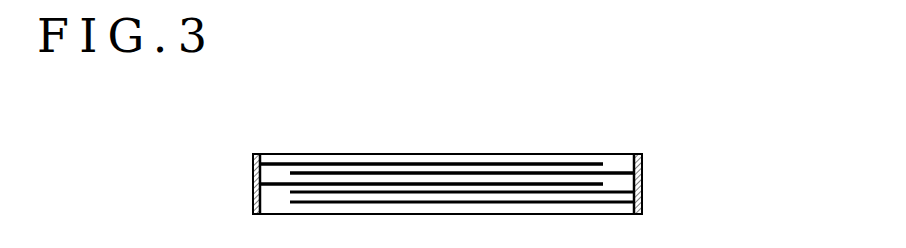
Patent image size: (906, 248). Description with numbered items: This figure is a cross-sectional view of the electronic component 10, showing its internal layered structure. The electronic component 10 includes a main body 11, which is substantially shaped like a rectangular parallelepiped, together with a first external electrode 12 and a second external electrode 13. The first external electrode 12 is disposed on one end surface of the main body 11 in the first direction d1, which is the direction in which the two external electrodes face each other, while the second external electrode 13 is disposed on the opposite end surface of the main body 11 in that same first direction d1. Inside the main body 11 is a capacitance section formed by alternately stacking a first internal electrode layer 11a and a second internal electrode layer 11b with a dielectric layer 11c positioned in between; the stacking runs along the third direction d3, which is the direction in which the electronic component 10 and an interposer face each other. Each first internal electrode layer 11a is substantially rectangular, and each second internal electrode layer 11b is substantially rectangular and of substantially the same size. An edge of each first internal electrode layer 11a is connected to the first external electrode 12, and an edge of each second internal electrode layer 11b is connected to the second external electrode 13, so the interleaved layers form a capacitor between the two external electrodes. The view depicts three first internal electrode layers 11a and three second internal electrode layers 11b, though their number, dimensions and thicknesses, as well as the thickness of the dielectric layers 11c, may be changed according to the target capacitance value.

The electronic component 10 is at (443, 154).
The main body 11 is at (305, 158).
The first internal electrode layer 11a is at (502, 164).
The second internal electrode layer 11b is at (545, 173).
The dielectric layer 11c is at (582, 173).
The first external electrode 12 is at (254, 167).
The second external electrode 13 is at (642, 177).
The third direction d3 is at (632, 145).
The first direction d1 is at (612, 125).